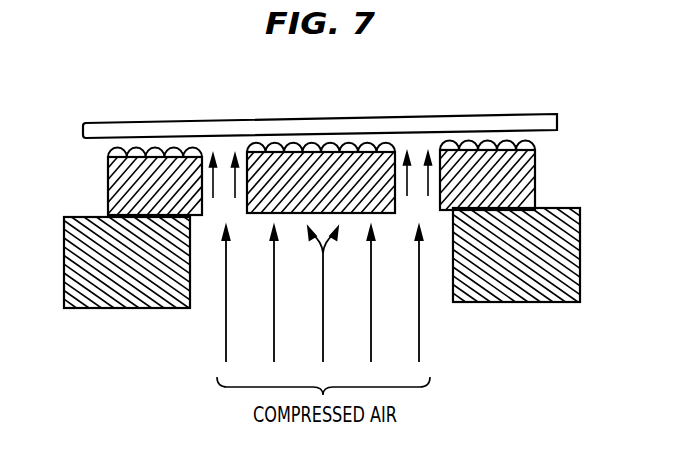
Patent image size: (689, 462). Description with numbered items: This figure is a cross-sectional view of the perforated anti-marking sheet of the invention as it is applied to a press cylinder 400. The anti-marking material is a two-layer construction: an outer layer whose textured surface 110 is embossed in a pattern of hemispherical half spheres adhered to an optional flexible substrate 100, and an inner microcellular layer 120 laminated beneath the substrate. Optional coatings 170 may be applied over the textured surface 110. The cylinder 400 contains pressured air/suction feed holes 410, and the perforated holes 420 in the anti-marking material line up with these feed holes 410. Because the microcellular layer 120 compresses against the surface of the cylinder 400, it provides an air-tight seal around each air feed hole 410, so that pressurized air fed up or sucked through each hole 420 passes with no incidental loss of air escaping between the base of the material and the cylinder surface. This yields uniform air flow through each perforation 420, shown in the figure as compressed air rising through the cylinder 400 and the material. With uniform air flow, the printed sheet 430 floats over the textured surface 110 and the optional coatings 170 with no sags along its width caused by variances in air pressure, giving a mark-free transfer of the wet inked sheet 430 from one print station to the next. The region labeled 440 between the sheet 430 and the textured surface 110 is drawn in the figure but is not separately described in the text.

The flexible substrate 100 is at (108, 165).
The textured surface 110 is at (535, 143).
The microcellular layer 120 is at (536, 191).
The optional coatings 170 is at (108, 153).
The cylinder 400 is at (580, 262).
The pressured air/suction feed holes 410 is at (355, 278).
The perforated holes 420 is at (417, 153).
The sheet 430 is at (548, 125).
The gap between plate and protrusions 440 is at (113, 146).